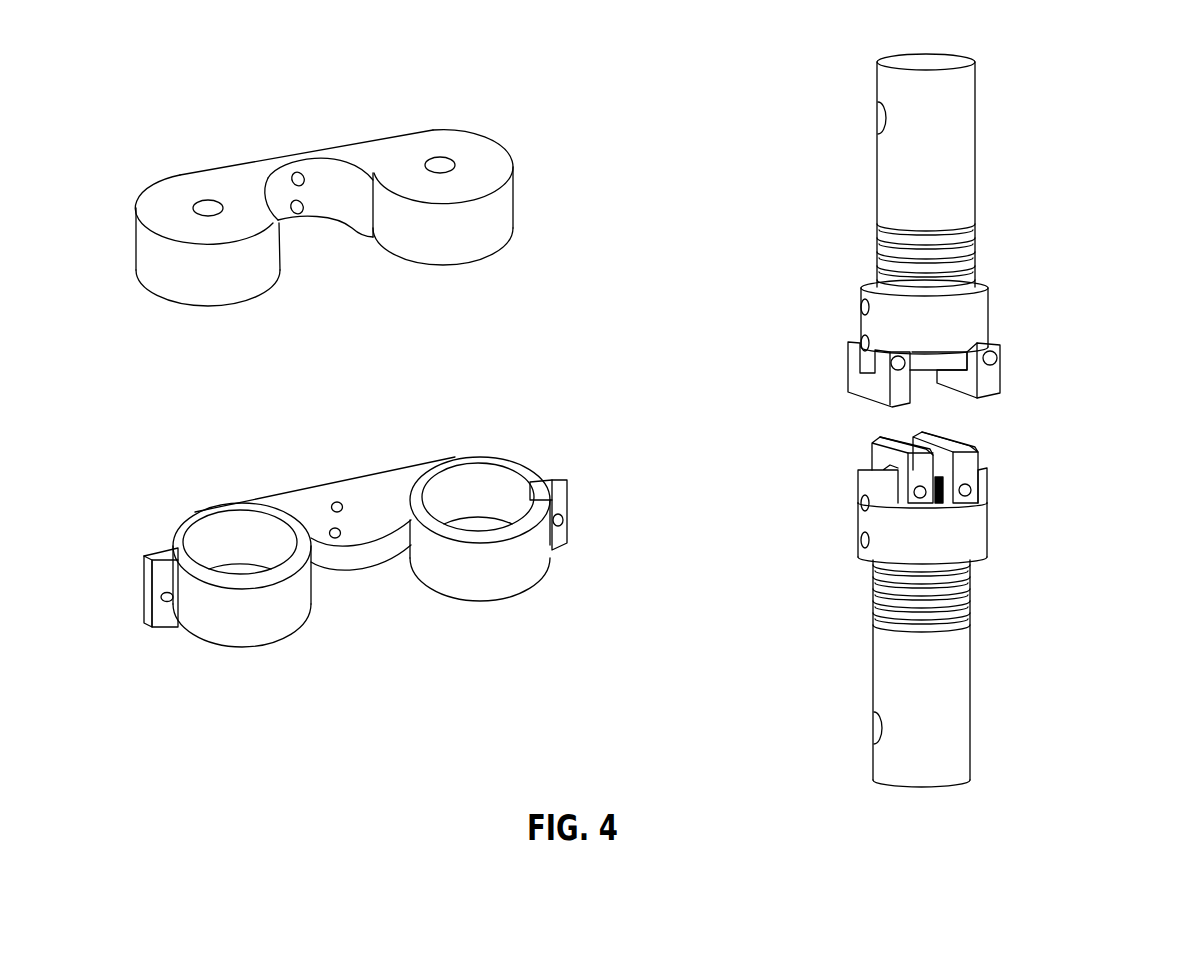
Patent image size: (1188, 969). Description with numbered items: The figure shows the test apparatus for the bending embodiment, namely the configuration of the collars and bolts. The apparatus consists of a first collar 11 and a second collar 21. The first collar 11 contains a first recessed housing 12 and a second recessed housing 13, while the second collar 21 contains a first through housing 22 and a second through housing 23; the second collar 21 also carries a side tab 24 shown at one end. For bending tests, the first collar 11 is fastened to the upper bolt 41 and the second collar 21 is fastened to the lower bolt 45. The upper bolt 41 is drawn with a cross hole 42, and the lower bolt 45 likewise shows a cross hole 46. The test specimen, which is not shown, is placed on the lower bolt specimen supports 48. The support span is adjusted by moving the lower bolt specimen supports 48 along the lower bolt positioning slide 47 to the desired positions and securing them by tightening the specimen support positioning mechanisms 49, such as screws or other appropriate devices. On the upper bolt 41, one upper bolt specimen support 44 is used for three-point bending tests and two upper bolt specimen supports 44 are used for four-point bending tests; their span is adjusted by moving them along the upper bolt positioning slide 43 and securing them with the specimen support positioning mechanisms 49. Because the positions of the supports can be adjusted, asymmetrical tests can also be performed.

The first collar 11 is at (293, 93).
The first recessed housing 12 is at (197, 195).
The second recessed housing 13 is at (448, 157).
The second collar 21 is at (270, 465).
The first through housing 22 is at (230, 552).
The second through housing 23 is at (468, 492).
The side tab 24 is at (152, 612).
The upper bolt 41 is at (1068, 108).
The upper rod cross hole 42 is at (877, 115).
The upper bolt positioning slide 43 is at (935, 360).
The upper bolt specimen support 44 is at (847, 378).
The lower bolt 45 is at (1065, 742).
The lower rod cross hole 46 is at (875, 730).
The lower bolt positioning slide 47 is at (860, 480).
The lower bolt specimen support 48 is at (863, 452).
The specimen support positioning mechanism 49 is at (887, 355).